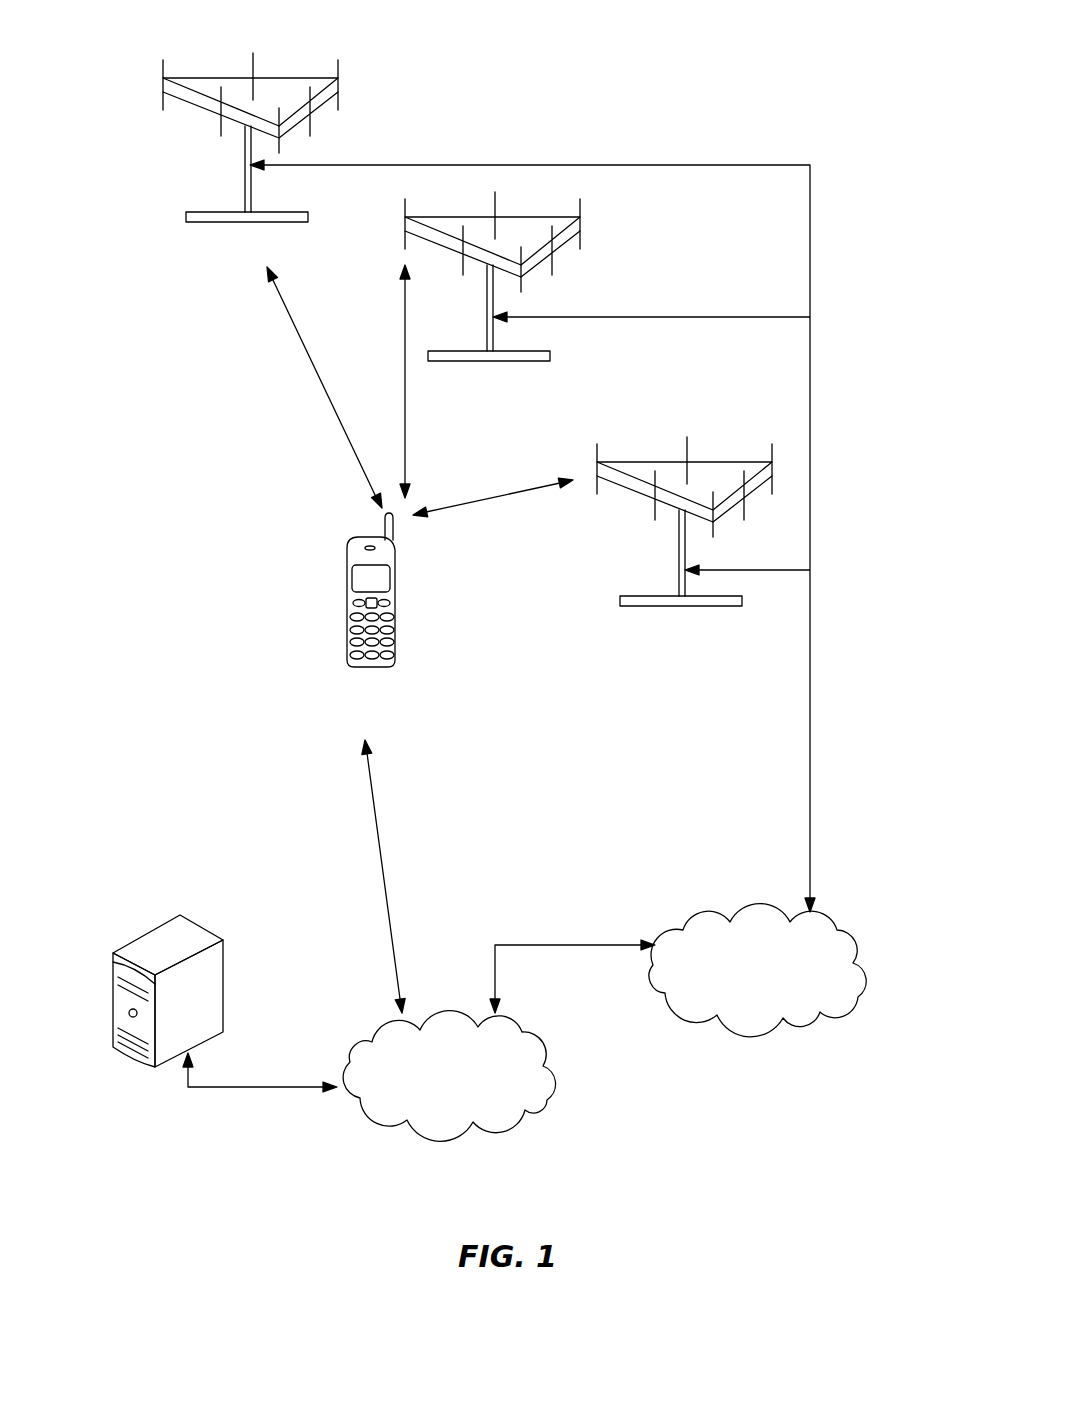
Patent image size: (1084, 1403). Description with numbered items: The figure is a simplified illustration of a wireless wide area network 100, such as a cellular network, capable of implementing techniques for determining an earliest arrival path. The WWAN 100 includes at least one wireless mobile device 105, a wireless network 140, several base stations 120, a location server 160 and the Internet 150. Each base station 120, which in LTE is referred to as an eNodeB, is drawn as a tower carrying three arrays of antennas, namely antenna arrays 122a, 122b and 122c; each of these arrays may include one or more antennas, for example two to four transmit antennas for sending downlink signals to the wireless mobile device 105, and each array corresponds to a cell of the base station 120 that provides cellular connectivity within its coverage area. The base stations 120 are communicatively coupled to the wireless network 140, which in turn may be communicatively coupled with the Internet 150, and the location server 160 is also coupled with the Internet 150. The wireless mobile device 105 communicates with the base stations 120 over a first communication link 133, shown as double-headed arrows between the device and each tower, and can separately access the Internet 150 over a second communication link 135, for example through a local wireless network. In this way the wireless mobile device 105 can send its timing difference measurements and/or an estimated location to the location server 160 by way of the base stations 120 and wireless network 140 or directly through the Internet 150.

The wireless wide area network (WWAN) 100 is at (818, 74).
The wireless mobile device 105 is at (348, 562).
The base station 120 is at (240, 222).
The antenna array 122a is at (275, 75).
The antenna array 122b is at (207, 110).
The antenna array 122c is at (320, 108).
The first communication link 133 is at (302, 347).
The second communication link 135 is at (382, 855).
The wireless network 140 is at (750, 1028).
The Internet 150 is at (437, 1135).
The location server 160 is at (165, 920).